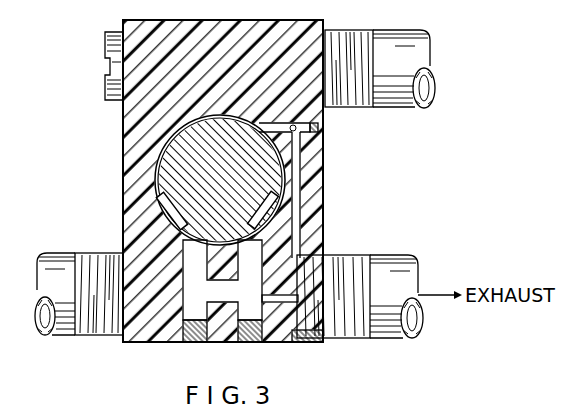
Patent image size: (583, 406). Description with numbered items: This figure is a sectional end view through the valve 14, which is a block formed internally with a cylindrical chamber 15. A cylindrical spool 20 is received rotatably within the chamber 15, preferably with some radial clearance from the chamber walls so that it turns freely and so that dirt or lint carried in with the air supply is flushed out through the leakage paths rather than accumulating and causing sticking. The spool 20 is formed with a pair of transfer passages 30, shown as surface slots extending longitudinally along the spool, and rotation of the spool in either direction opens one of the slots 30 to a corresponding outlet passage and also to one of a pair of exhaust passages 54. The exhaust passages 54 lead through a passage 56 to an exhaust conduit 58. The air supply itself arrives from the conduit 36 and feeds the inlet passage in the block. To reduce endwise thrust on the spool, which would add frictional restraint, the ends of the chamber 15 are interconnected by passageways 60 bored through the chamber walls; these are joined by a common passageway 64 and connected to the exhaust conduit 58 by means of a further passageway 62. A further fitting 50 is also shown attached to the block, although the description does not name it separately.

The valve 14 is at (325, 217).
The cylindrical chamber 15 is at (163, 139).
The cylindrical spool 20 is at (163, 157).
The transfer passages 30 is at (172, 208).
The conduit 36 is at (418, 107).
The supply conduit fitting 50 is at (66, 265).
The exhaust passages 54 is at (220, 342).
The passage 56 is at (277, 300).
The exhaust conduit 58 is at (388, 325).
The passageways 60 is at (311, 127).
The further passageway 62 is at (298, 188).
The common passageway 64 is at (312, 141).